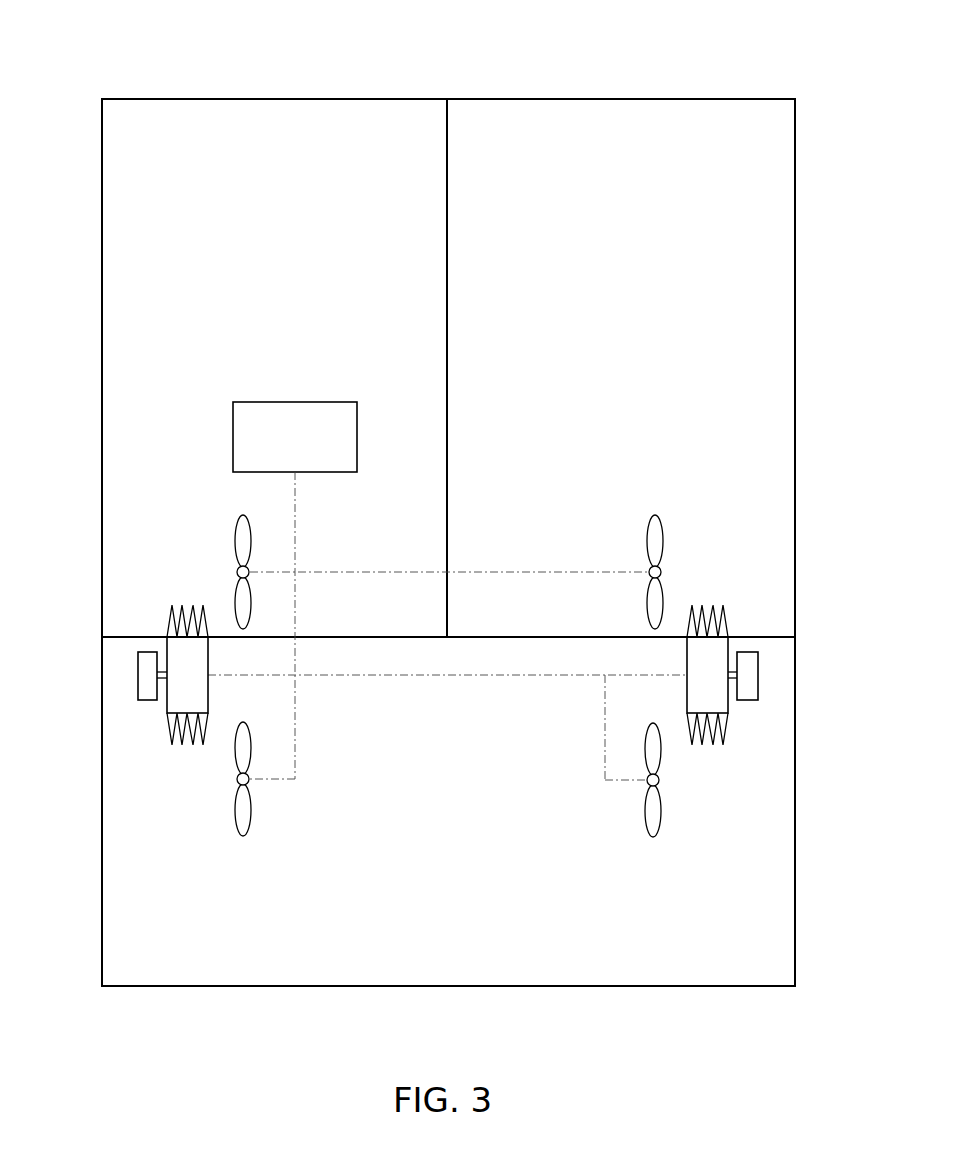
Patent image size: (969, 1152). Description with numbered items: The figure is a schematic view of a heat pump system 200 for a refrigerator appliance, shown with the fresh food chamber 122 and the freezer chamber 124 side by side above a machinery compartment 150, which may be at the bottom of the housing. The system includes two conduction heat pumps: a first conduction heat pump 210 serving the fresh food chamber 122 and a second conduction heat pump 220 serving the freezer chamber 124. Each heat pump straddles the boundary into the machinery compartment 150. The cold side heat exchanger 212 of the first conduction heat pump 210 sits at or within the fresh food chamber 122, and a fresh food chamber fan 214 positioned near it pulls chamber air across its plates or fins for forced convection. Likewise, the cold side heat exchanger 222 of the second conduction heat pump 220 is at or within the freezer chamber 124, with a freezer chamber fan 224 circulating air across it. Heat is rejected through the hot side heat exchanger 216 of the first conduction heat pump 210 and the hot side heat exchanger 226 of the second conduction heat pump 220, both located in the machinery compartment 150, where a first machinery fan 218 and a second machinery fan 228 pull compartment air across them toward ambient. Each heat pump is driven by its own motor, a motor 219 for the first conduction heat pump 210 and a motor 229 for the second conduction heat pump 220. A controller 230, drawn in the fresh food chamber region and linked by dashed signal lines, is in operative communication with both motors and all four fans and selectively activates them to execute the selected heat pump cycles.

The heat pump system 200 is at (82, 68).
The fresh food chamber 122 is at (363, 160).
The freezer chamber 124 is at (532, 160).
The machinery compartment 150 is at (436, 972).
The first conduction heat pump 210 is at (209, 693).
The cold side heat exchanger 212 is at (170, 607).
The fresh food chamber fan 214 is at (238, 521).
The hot side heat exchanger 216 is at (170, 740).
The first machinery fan 218 is at (238, 830).
The motor 219 is at (138, 668).
The second conduction heat pump 220 is at (686, 700).
The cold side heat exchanger 222 is at (727, 606).
The freezer chamber fan 224 is at (660, 522).
The hot side heat exchanger 226 is at (727, 742).
The second machinery fan 228 is at (658, 833).
The motor 229 is at (758, 666).
The controller 230 is at (447, 591).